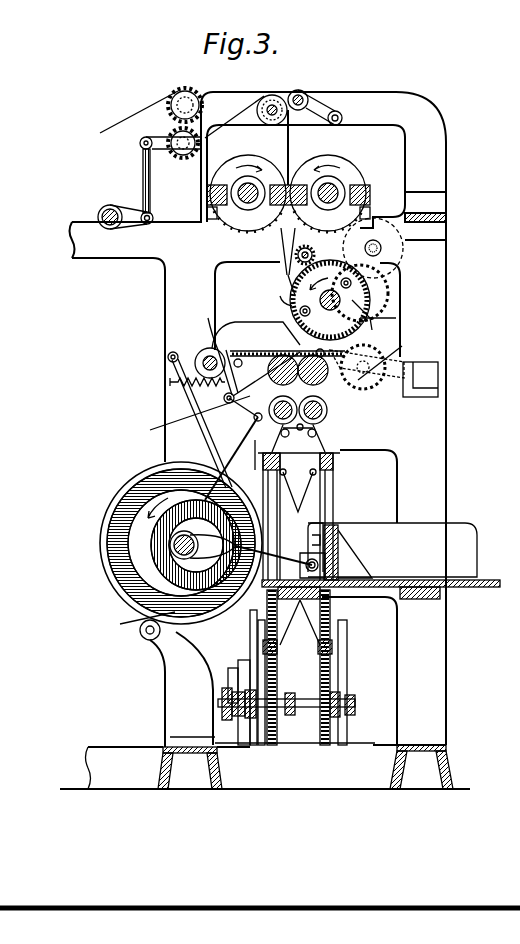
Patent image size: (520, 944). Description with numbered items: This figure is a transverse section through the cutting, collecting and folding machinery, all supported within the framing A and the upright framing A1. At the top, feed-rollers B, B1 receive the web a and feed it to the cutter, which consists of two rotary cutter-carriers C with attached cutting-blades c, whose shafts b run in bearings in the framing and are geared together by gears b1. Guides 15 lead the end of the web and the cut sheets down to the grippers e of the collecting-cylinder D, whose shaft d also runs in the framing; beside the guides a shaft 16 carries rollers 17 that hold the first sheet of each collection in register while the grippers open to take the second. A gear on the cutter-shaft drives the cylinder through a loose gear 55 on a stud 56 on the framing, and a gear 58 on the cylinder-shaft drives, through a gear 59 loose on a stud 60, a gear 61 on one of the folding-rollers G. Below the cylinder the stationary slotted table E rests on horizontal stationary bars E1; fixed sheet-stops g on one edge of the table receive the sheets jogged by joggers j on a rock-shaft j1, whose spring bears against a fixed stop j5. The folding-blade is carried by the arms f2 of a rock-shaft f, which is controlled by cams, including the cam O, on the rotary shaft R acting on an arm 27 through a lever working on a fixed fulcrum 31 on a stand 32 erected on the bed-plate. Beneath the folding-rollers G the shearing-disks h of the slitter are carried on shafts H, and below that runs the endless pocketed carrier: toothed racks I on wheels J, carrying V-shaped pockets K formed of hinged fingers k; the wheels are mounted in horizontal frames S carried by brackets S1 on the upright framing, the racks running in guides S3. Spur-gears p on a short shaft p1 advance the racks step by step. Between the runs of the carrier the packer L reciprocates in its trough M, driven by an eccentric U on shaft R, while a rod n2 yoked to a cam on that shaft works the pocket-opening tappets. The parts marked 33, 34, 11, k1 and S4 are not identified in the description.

The framing (bed-plate) A is at (262, 784).
The upright framing A1 is at (182, 290).
The web a is at (100, 133).
The feed-roller B is at (190, 98).
The feed-roller B1 is at (272, 95).
The gears b1 is at (222, 224).
The rotary cutter-carrier C is at (240, 180).
The cutter-carrier shaft b is at (248, 204).
The cutting-blade c is at (207, 195).
The guides 15 is at (283, 251).
The shaft 16 is at (286, 264).
The rollers 17 is at (314, 255).
The stud 56 is at (383, 250).
The loose gear 55 is at (390, 272).
The collecting-cylinder D is at (330, 300).
The collecting-cylinder shaft d is at (334, 306).
The grippers e is at (290, 300).
The sheet-stops g is at (352, 318).
The gear 58 is at (396, 318).
The stationary slotted table E is at (275, 353).
The horizontal stationary bars E1 is at (380, 356).
The stud 60 is at (376, 372).
The gear 59 is at (420, 398).
The gear 61 is at (375, 386).
The folding-rollers G is at (331, 408).
The shearing-disks h is at (326, 436).
The slitter shaft H is at (330, 420).
The rod n2 is at (255, 424).
The bar 33 is at (214, 446).
The rock-shaft j1 is at (192, 420).
The arm 27 is at (168, 357).
The fixed stop j5 is at (168, 382).
The joggers j is at (208, 320).
The rock-shaft f is at (205, 352).
The arms f2 is at (234, 324).
The cam O is at (100, 530).
The rim 34 is at (118, 508).
The eccentric U is at (162, 534).
The rotary shaft R is at (183, 547).
The pivot 11 is at (300, 566).
The V-shaped pocket K is at (297, 551).
The endless toothed racks I is at (335, 466).
The horizontal frames S is at (334, 500).
The hinged side members (fingers) k is at (285, 510).
The link k1 is at (303, 500).
The wheels J is at (310, 530).
The packer L is at (340, 556).
The packing box or trough M is at (381, 561).
The fixed fulcrum 31 is at (148, 638).
The stand 32 is at (178, 690).
The spur-gears p is at (320, 746).
The short horizontal shaft p1 is at (292, 708).
The brackets S1 is at (252, 618).
The plate S4 is at (258, 648).
The horizontal guides S3 is at (335, 645).